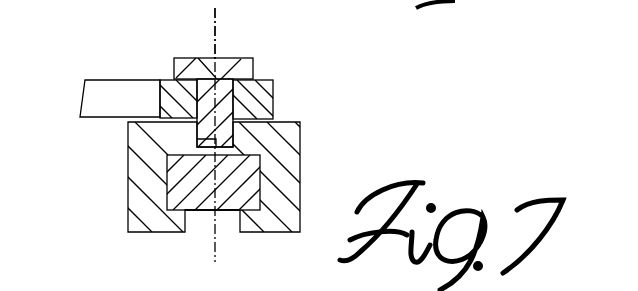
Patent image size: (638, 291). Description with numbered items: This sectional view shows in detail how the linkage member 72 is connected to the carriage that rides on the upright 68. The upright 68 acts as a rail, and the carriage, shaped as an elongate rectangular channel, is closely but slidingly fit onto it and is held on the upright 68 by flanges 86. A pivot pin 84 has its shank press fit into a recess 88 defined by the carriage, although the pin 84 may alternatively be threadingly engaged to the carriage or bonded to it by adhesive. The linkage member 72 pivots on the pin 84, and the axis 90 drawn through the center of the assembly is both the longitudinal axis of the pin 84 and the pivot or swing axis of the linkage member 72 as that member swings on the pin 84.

The upright 68 is at (210, 214).
The linkage member 72 is at (95, 88).
The pivot pin 84 is at (247, 57).
The flanges 86 is at (190, 232).
The recess 88 is at (197, 140).
The axis 90 is at (204, 56).